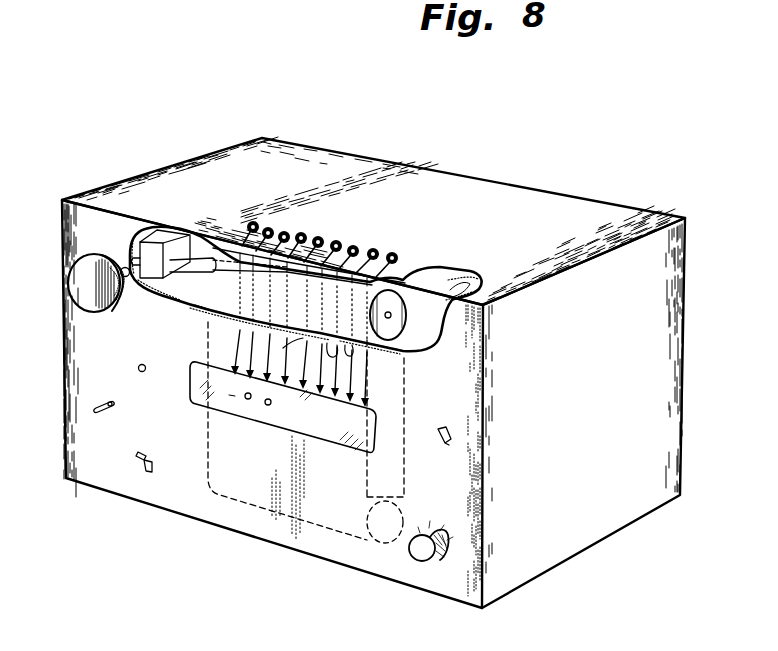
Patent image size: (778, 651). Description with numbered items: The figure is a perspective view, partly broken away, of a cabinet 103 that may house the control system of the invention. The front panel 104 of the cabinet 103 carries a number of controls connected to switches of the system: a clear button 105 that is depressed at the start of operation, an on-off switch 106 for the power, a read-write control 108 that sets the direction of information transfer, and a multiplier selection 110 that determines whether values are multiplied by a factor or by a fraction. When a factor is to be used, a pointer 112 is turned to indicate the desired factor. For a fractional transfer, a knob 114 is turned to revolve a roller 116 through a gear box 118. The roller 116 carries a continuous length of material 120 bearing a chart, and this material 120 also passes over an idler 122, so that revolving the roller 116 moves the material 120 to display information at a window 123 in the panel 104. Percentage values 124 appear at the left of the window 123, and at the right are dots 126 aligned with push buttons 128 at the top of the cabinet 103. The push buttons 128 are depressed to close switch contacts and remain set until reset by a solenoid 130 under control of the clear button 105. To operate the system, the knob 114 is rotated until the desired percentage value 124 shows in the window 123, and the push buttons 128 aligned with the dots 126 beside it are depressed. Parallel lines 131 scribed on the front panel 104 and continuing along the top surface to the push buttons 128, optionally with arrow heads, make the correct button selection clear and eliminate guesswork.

The cabinet 103 is at (633, 211).
The front panel 104 is at (310, 548).
The clear button 105 is at (144, 365).
The on-off switch 106 is at (114, 404).
The read-write control 108 is at (154, 467).
The multiplier selection 110 is at (451, 440).
The pointer 112 is at (448, 557).
The knob 114 is at (122, 267).
The roller 116 is at (402, 313).
The gear box 118 is at (180, 238).
The continuous length of material 120 is at (331, 305).
The idler 122 is at (374, 541).
The window 123 is at (343, 443).
The percentage values 124 is at (217, 399).
The dots 126 is at (267, 406).
The push buttons 128 is at (350, 247).
The solenoid 130 is at (445, 283).
The parallel lines 131 is at (297, 339).